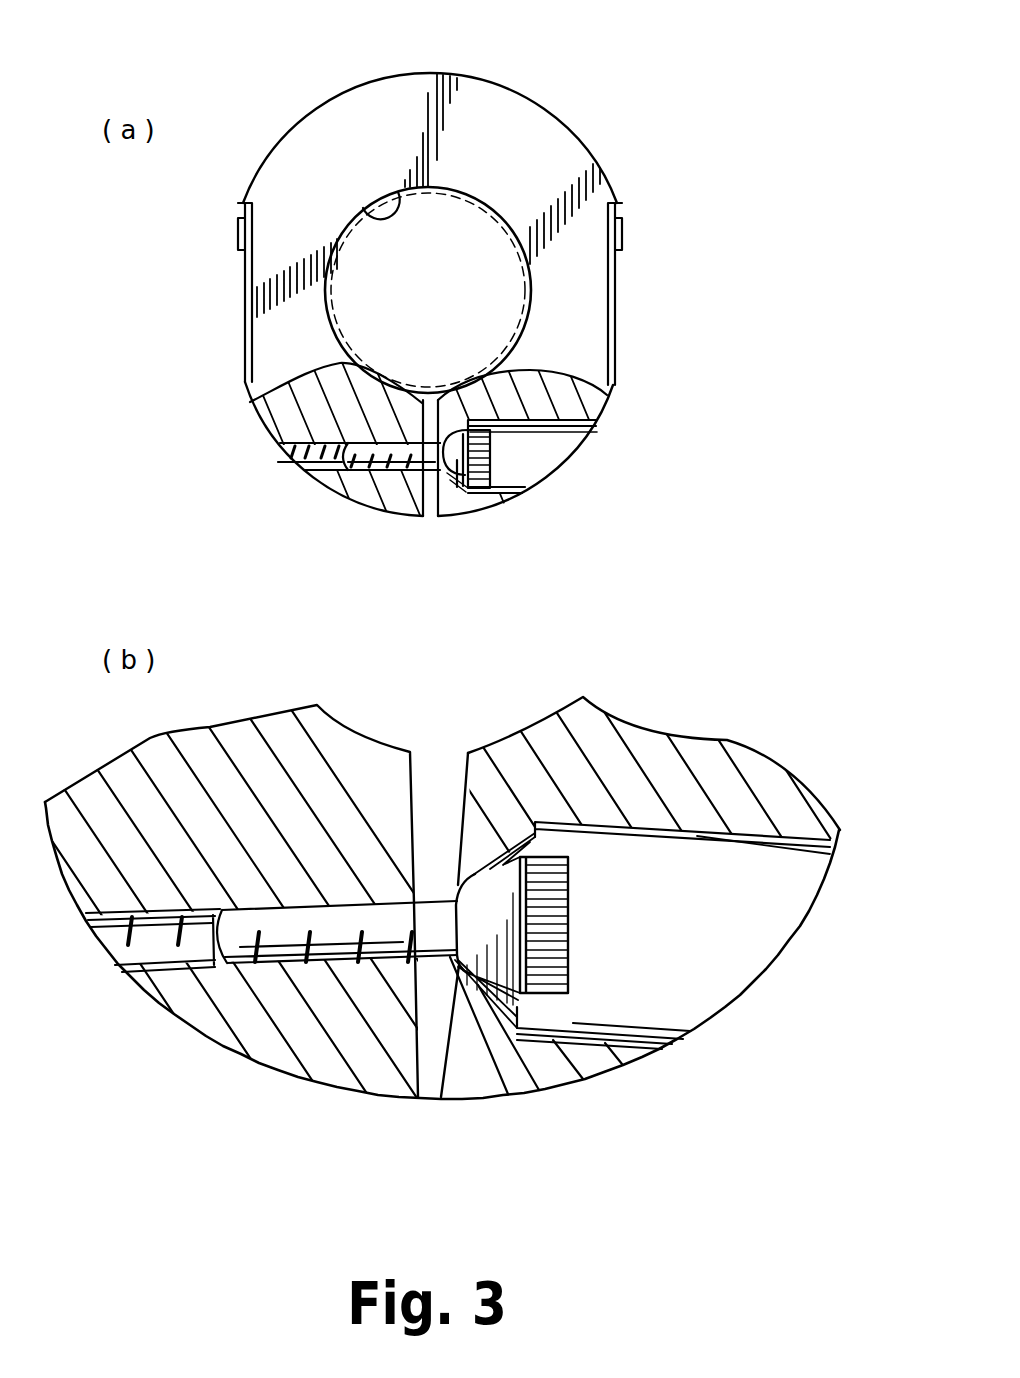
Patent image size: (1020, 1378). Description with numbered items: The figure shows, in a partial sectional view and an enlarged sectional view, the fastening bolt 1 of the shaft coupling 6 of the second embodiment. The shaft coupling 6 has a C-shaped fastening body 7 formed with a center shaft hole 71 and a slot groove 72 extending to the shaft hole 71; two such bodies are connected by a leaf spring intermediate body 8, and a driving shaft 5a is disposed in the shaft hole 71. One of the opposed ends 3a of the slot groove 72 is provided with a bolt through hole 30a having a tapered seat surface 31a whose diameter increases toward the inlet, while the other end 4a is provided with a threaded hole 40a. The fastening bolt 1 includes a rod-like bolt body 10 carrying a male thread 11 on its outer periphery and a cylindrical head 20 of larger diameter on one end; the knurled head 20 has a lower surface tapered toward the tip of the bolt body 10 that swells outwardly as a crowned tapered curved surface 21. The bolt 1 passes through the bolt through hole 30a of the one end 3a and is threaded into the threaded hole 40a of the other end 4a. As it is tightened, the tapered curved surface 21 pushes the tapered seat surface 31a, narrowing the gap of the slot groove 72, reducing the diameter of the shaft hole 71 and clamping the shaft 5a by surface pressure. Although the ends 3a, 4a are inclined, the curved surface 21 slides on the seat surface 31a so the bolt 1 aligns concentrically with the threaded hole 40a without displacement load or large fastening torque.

The fastening bolt 1 is at (595, 724).
The one end 3a is at (463, 517).
The other end 4a is at (397, 500).
The shaft 5a is at (485, 210).
The shaft coupling 6 is at (605, 105).
The fastening body 7 is at (483, 117).
The leaf spring intermediate body 8 is at (243, 283).
The bolt body 10 is at (341, 470).
The male thread 11 is at (363, 487).
The head 20 is at (492, 475).
The tapered curved surface 21 is at (455, 485).
The bolt through hole 30a is at (570, 430).
The tapered seat surface 31a is at (525, 395).
The threaded hole 40a is at (278, 456).
The shaft hole 71 is at (366, 207).
The slot groove 72 is at (427, 500).